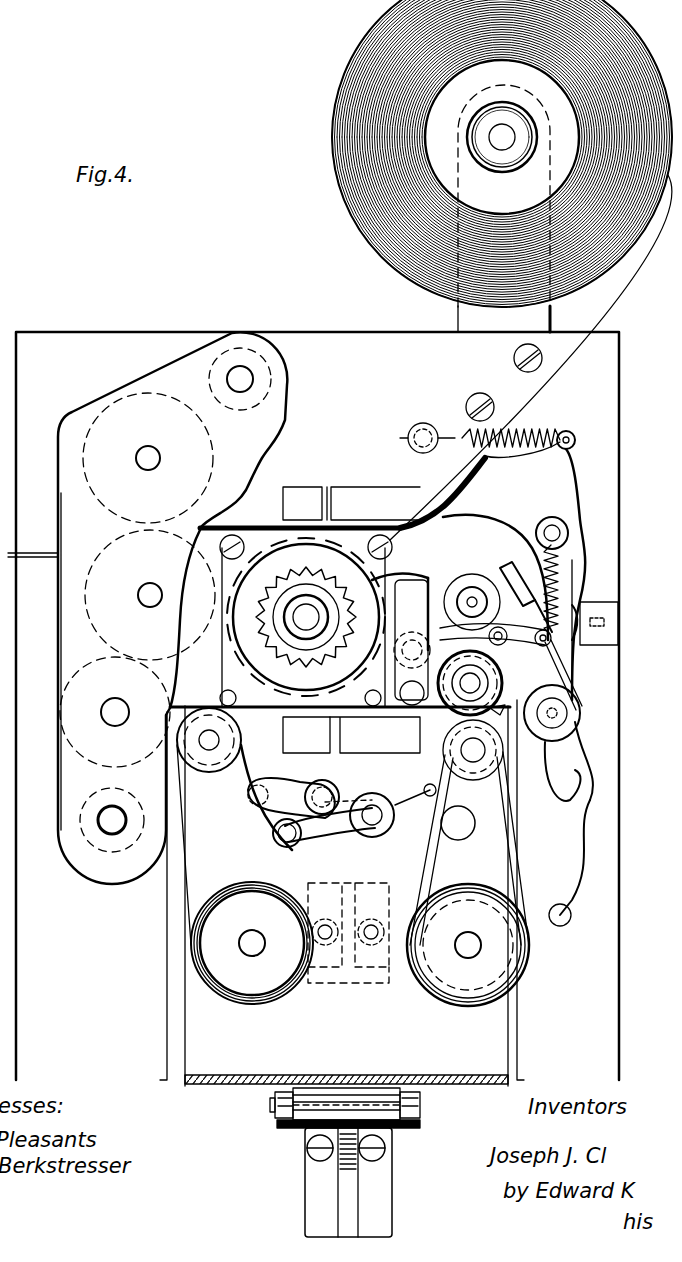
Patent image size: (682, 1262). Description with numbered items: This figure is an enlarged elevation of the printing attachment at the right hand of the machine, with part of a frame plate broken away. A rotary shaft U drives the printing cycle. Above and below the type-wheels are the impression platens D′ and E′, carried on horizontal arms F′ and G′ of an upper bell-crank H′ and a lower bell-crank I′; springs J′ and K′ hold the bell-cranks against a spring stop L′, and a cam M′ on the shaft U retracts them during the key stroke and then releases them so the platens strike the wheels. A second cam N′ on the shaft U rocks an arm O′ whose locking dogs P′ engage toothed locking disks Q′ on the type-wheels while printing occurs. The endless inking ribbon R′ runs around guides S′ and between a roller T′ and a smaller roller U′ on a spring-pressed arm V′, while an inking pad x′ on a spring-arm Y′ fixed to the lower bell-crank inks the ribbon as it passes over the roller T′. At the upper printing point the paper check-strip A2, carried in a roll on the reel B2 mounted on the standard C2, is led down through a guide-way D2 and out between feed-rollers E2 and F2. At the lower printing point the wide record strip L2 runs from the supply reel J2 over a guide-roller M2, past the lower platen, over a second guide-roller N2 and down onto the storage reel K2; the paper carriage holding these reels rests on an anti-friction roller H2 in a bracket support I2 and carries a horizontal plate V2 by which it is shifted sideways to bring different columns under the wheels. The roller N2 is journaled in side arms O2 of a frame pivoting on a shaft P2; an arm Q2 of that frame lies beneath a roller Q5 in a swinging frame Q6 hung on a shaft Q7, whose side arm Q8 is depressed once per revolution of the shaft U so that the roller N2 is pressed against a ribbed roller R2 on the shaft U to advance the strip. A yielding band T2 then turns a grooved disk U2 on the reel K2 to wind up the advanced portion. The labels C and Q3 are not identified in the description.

The paper check-strip A2 is at (502, 153).
The reel B2 is at (504, 196).
The standard C2 is at (490, 318).
The spring J′ is at (487, 426).
The impression platen D′ is at (300, 487).
The horizontal arm F′ is at (330, 487).
The guide-way D2 is at (427, 510).
The bell-crank H′ is at (514, 571).
The feed-roller E2 is at (172, 608).
The feed-roller F2 is at (150, 595).
The endless inking ribbon R′ is at (228, 566).
The bracket frame C is at (222, 655).
The guides S′ is at (220, 698).
The toothed locking disk Q′ is at (306, 617).
The horizontal plate V2 is at (306, 617).
The locking dogs P′ is at (405, 572).
The arm O′ is at (438, 606).
The cam M′ is at (412, 642).
The roller T′ is at (480, 595).
The pivot Q3 is at (472, 602).
The inking pad x′ is at (526, 588).
The roller U′ is at (495, 624).
The spring-pressed arm V′ is at (538, 591).
The spring stop L′ is at (577, 606).
The spring-arm Y′ is at (560, 665).
The rotary shaft U is at (470, 683).
The cam N′ is at (504, 694).
The bell-crank I′ is at (558, 743).
The spring K′ is at (582, 838).
The impression platen E′ is at (283, 735).
The ribbed roller R2 is at (375, 735).
The guide-roller M2 is at (209, 752).
The record strip L2 is at (180, 820).
The shaft Q7 is at (258, 787).
The horizontal arm G′ is at (304, 758).
The roller Q5 is at (327, 787).
The swinging frame Q6 is at (270, 808).
The arm Q2 is at (292, 838).
The shaft P2 is at (372, 826).
The side arm Q8 is at (376, 777).
The side arms O2 is at (414, 826).
The guide-roller N2 is at (471, 764).
The yielding band T2 is at (469, 848).
The supply reel J2 is at (252, 930).
The grooved disk U2 is at (359, 951).
The storage reel K2 is at (468, 950).
The anti-friction roller H2 is at (296, 1126).
The bracket support I2 is at (380, 1184).